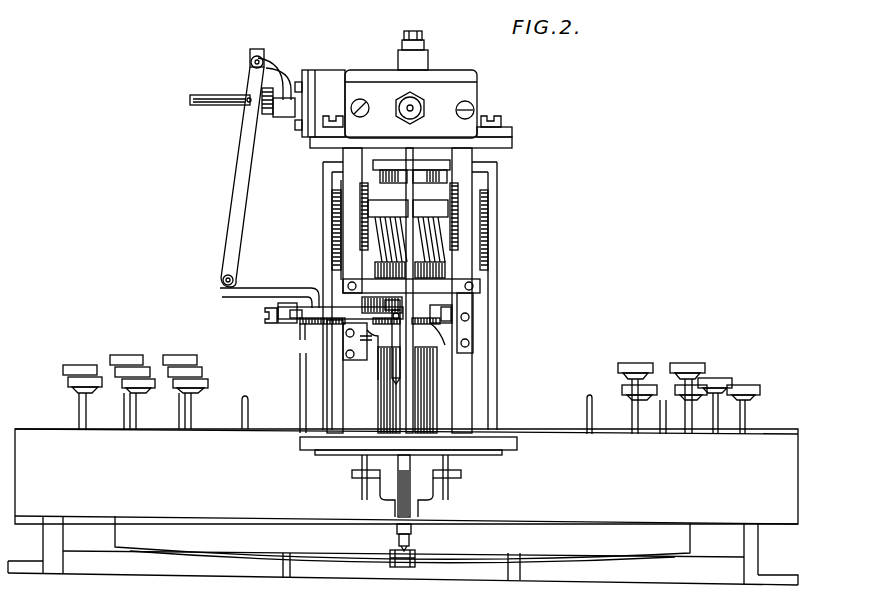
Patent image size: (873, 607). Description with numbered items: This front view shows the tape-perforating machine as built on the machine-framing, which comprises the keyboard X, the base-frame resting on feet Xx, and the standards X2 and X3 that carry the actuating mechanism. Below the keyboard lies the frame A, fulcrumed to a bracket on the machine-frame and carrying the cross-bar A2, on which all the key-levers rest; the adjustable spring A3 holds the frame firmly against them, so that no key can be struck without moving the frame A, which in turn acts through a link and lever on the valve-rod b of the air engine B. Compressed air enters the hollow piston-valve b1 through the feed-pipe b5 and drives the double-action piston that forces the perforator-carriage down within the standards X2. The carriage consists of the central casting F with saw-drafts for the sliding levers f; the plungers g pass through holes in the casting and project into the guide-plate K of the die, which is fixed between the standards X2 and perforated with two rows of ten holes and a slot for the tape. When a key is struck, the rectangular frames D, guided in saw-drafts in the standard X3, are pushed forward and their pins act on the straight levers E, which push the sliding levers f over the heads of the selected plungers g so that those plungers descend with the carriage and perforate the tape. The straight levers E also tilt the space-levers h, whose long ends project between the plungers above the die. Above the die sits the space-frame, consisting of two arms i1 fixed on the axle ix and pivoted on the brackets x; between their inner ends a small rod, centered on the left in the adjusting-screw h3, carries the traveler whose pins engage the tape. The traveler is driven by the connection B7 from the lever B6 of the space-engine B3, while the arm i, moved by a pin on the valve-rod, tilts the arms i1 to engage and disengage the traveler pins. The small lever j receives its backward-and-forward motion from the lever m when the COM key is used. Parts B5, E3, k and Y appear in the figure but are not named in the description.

The air engine B is at (411, 89).
The space-engine B3 is at (321, 78).
The feed-pipe b5 is at (414, 111).
The hollow piston-valve b1 is at (418, 165).
The connecting rod B5 is at (193, 104).
The lever of the space-engine B6 is at (240, 192).
The connection B7 is at (257, 297).
The standard X3 is at (491, 286).
The standards X2 is at (342, 387).
The rectangular frames D is at (332, 254).
The adjustable spring A3 is at (393, 567).
The cross head E3 is at (386, 190).
The central casting F is at (368, 210).
The sliding levers f is at (385, 236).
The plungers g is at (380, 270).
The stop k is at (392, 295).
The arms of the space-frame i1 is at (475, 330).
The adjusting-screw h3 is at (270, 323).
The brackets x is at (296, 326).
The small lever j is at (302, 328).
The guide-plate of the die K is at (315, 324).
The space-levers h is at (378, 312).
The arm i is at (416, 347).
The axle ix is at (433, 316).
The lever m is at (304, 378).
The straight levers E is at (407, 390).
The valve-rod b is at (408, 395).
The keyboard X is at (406, 439).
The table Y is at (455, 443).
The cross-bar A2 is at (402, 539).
The frame A is at (435, 556).
The feet Xx is at (58, 540).